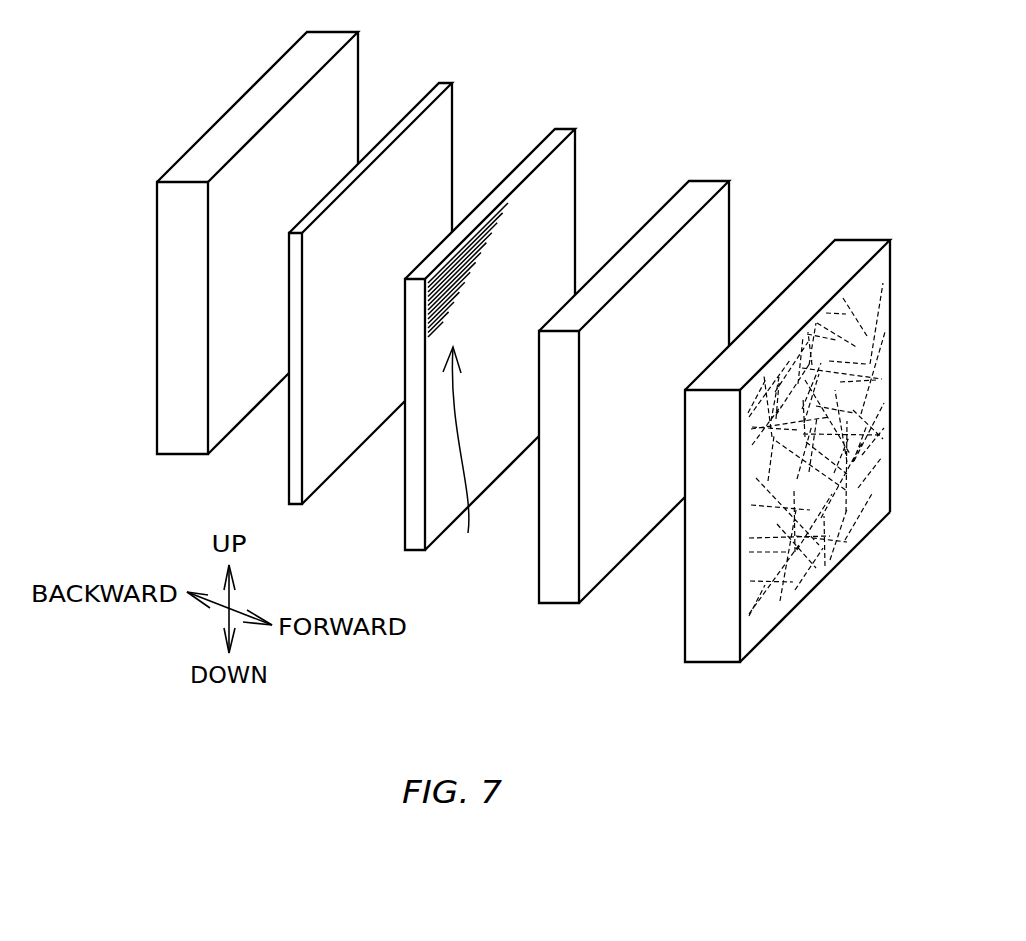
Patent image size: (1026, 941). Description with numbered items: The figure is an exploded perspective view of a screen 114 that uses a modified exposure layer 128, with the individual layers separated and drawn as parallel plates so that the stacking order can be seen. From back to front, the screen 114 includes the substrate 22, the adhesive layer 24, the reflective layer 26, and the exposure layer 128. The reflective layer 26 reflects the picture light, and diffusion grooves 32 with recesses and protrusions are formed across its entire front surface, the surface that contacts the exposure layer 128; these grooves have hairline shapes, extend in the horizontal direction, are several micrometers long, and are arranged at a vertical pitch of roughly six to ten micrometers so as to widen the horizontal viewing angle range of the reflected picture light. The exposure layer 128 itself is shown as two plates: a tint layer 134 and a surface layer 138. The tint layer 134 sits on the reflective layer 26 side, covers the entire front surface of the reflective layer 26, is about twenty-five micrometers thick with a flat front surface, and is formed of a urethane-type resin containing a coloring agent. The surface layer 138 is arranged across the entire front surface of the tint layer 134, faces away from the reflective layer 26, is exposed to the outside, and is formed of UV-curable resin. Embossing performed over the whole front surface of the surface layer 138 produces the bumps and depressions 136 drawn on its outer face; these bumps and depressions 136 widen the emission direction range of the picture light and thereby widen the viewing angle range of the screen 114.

The screen 114 is at (618, 50).
The substrate 22 is at (255, 98).
The adhesive layer 24 is at (413, 108).
The reflective layer 26 is at (524, 170).
The diffusion grooves 32 is at (461, 456).
The exposure layer 128 is at (848, 137).
The tint layer 134 is at (713, 187).
The bumps and depressions 136 is at (808, 616).
The surface layer 138 is at (852, 243).